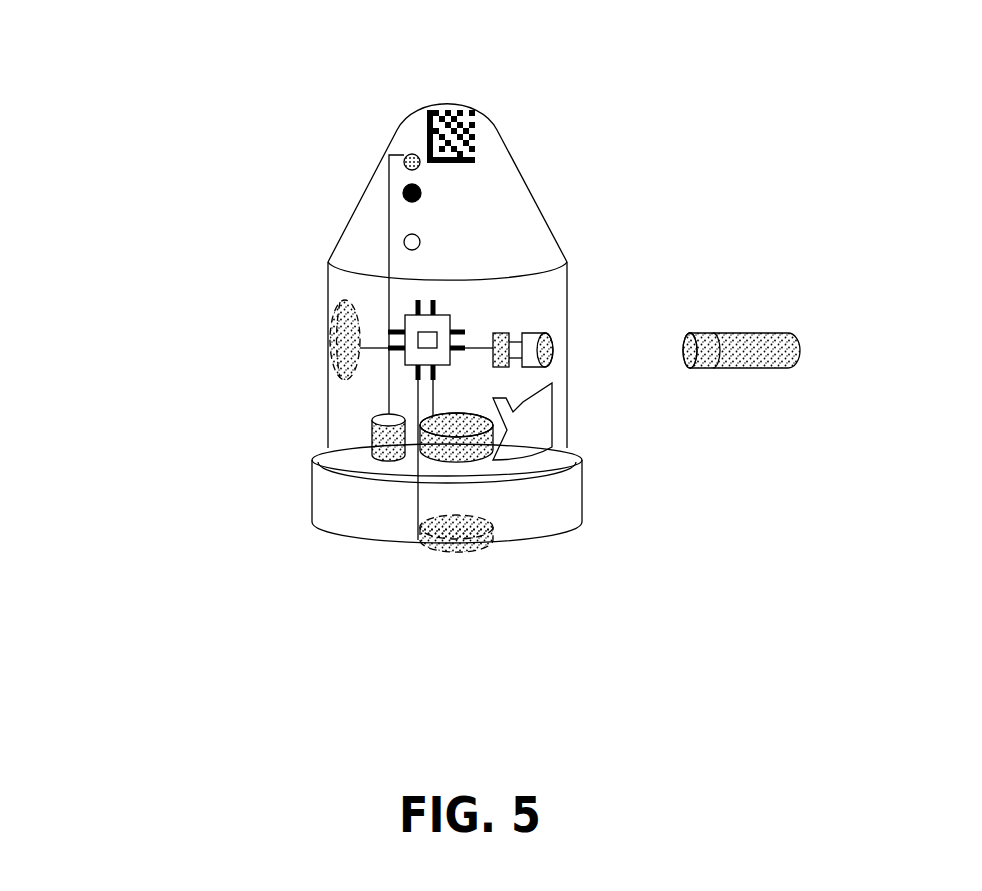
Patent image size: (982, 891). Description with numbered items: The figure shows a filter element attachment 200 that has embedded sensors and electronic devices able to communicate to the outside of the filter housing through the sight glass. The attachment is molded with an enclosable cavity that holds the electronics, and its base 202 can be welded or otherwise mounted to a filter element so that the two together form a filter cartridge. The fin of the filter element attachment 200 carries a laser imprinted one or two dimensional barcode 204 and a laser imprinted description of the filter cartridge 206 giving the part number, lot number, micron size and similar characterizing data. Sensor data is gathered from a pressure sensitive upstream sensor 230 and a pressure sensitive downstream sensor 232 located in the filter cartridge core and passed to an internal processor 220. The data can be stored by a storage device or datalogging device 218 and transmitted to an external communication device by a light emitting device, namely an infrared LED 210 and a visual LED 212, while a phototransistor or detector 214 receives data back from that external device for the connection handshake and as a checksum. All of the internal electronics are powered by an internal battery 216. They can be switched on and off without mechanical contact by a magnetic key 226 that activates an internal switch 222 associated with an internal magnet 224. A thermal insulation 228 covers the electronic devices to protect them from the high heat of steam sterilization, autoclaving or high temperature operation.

The filter element attachment 200 is at (155, 380).
The base 202 is at (313, 527).
The barcode 204 is at (465, 103).
The description of the filter cartridge 206 is at (527, 193).
The infrared LED 210 is at (403, 152).
The visual LED 212 is at (403, 193).
The phototransistor or detector 214 is at (403, 240).
The internal battery 216 is at (463, 463).
The storage device and/or datalogging device 218 is at (370, 432).
The internal processor 220 is at (400, 313).
The internal switch 222 is at (510, 333).
The internal magnet 224 is at (553, 345).
The magnetic key 226 is at (795, 332).
The thermal insulation 228 is at (523, 430).
The upstream sensor 230 is at (327, 348).
The downstream sensor 232 is at (463, 562).